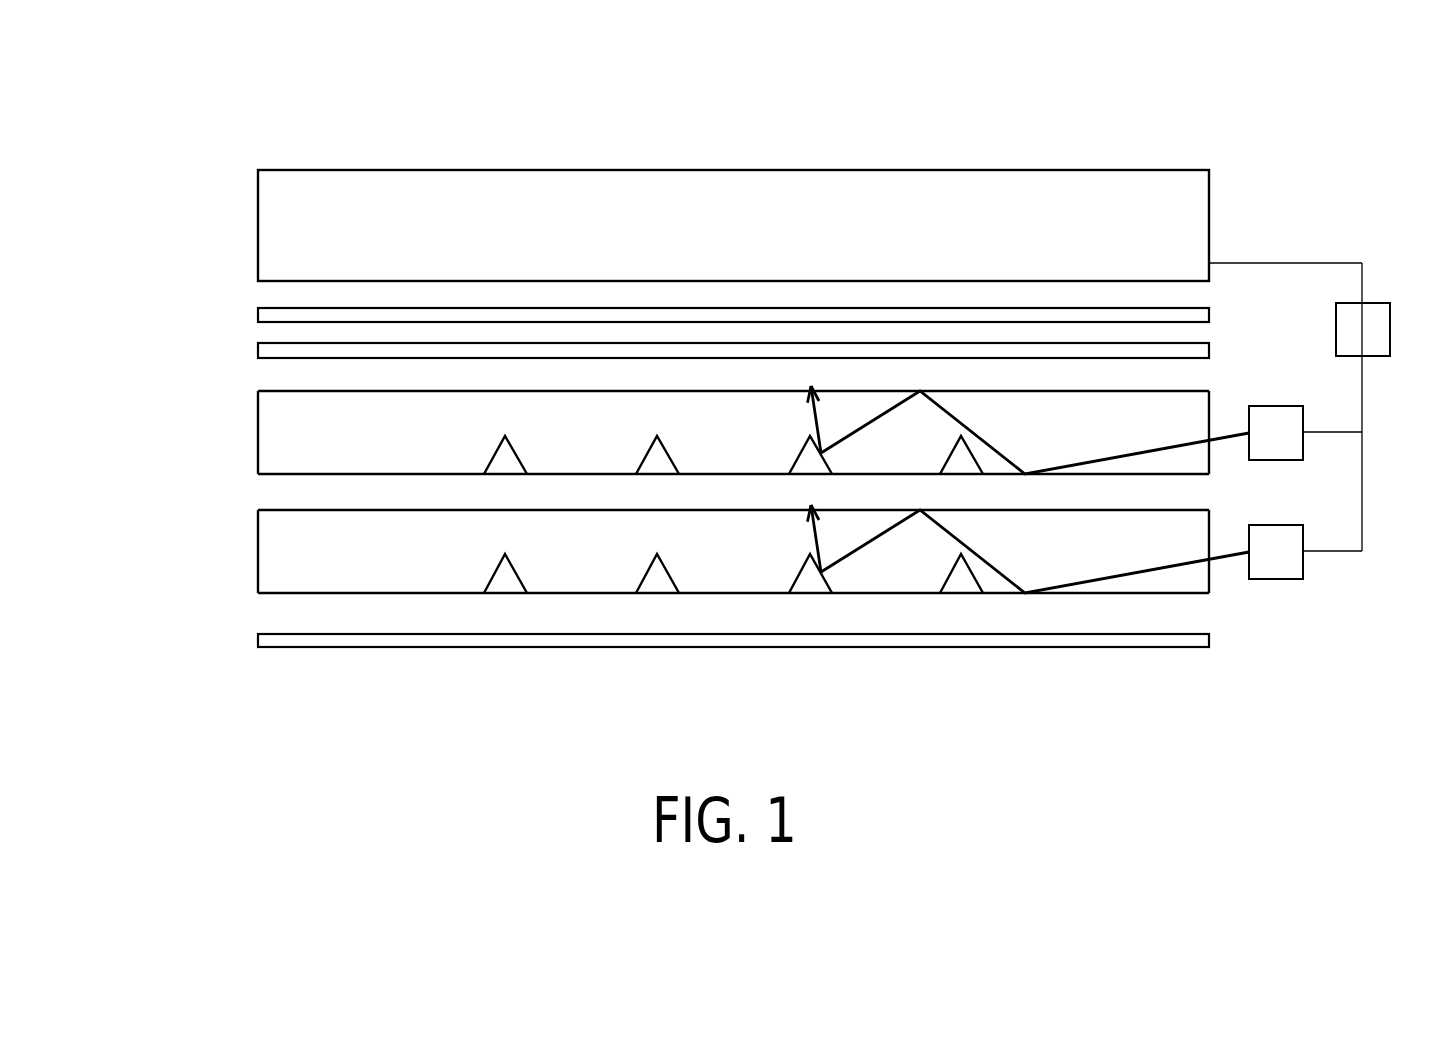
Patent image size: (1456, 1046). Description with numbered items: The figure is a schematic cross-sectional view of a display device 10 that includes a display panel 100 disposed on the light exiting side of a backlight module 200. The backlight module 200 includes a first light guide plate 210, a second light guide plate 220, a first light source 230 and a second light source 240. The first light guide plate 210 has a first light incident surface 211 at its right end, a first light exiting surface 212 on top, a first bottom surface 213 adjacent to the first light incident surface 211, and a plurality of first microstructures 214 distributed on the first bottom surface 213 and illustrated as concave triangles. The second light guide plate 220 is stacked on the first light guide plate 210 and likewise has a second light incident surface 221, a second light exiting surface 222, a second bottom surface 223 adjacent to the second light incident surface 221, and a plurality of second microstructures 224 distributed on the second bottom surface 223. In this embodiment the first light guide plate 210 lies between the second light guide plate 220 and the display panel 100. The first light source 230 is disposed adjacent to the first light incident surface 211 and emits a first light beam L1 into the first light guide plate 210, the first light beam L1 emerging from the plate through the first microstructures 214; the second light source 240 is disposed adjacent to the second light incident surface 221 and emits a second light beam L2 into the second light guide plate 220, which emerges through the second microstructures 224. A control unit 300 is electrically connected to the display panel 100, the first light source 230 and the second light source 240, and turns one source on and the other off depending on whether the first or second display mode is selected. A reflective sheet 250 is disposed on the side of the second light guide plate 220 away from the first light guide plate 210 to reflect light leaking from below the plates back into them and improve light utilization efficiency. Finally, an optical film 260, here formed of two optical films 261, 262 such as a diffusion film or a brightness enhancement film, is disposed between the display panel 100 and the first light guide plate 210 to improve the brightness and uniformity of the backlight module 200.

The display device 10 is at (180, 122).
The display panel 100 is at (275, 262).
The backlight module 200 is at (117, 488).
The first light guide plate 210 is at (739, 412).
The first light incident surface 211 is at (1209, 458).
The first light exiting surface 212 is at (733, 406).
The first bottom surface 213 is at (707, 474).
The first microstructures 214 is at (507, 465).
The second light guide plate 220 is at (712, 647).
The second light incident surface 221 is at (1209, 582).
The second light exiting surface 222 is at (384, 510).
The second bottom surface 223 is at (434, 581).
The second microstructures 224 is at (502, 582).
The first light source 230 is at (1280, 406).
The second light source 240 is at (1287, 572).
The reflective sheet 250 is at (263, 645).
The optical film 260 is at (153, 290).
The optical film 261 is at (263, 319).
The optical film 262 is at (263, 353).
The control unit 300 is at (1390, 330).
The first light beam L1 is at (1227, 437).
The second light beam L2 is at (1155, 573).